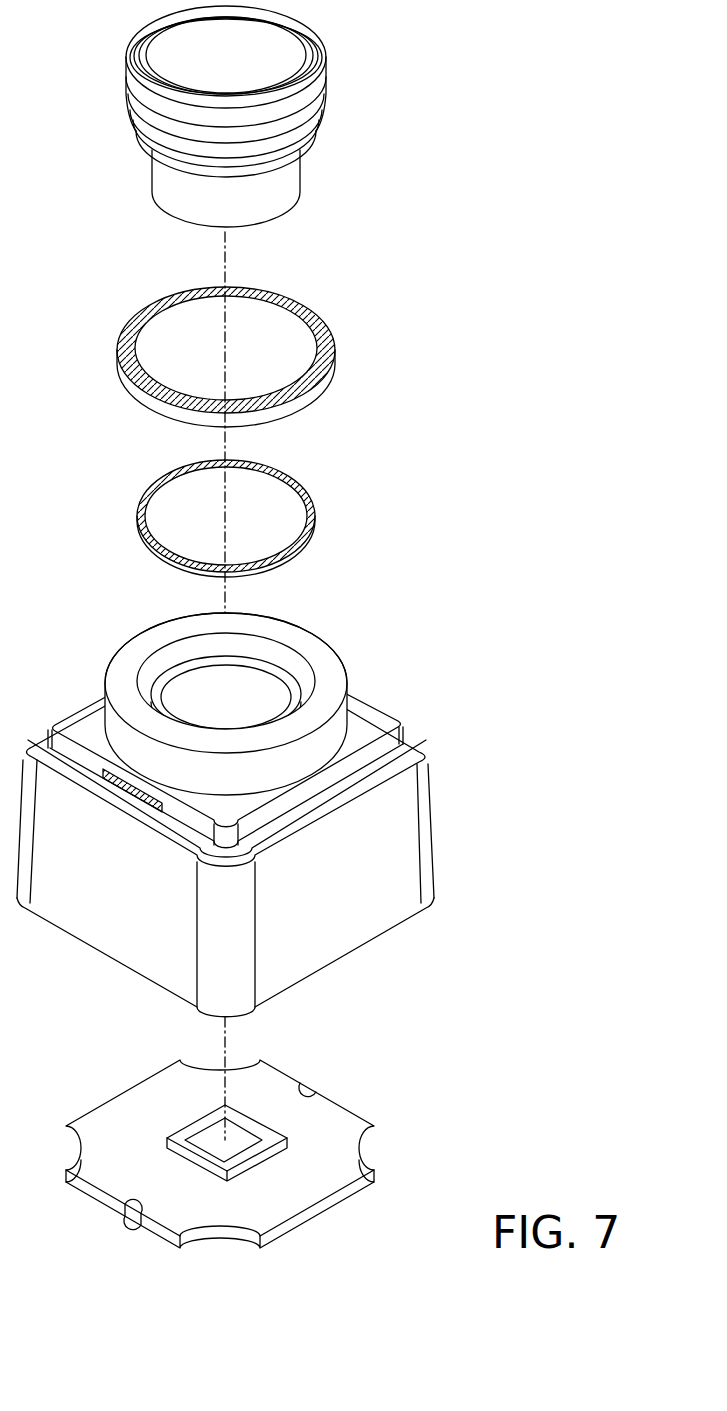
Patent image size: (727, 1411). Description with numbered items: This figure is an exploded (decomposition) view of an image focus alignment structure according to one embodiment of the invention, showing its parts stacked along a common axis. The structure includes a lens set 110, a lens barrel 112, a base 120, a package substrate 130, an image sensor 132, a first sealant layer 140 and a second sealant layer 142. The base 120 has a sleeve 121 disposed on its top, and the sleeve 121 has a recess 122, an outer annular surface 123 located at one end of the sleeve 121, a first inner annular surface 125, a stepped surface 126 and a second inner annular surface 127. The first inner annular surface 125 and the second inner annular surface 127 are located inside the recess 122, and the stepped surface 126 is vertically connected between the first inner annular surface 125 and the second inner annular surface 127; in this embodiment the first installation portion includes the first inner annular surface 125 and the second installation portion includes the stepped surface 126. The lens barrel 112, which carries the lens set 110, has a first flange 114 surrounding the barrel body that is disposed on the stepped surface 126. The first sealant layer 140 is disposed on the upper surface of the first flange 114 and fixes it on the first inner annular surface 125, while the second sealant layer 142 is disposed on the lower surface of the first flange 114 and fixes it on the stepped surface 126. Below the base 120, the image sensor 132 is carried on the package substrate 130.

The lens set 110 is at (263, 116).
The lens barrel 112 is at (322, 70).
The first flange 114 is at (318, 132).
The base 120 is at (231, 792).
The sleeve 121 is at (337, 723).
The recess 122 is at (201, 688).
The outer annular surface 123 is at (193, 681).
The first inner annular surface 125 is at (289, 655).
The stepped surface 126 is at (172, 708).
The second inner annular surface 127 is at (145, 702).
The package substrate 130 is at (233, 1149).
The image sensor 132 is at (237, 1147).
The first sealant layer 140 is at (334, 333).
The second sealant layer 142 is at (143, 503).